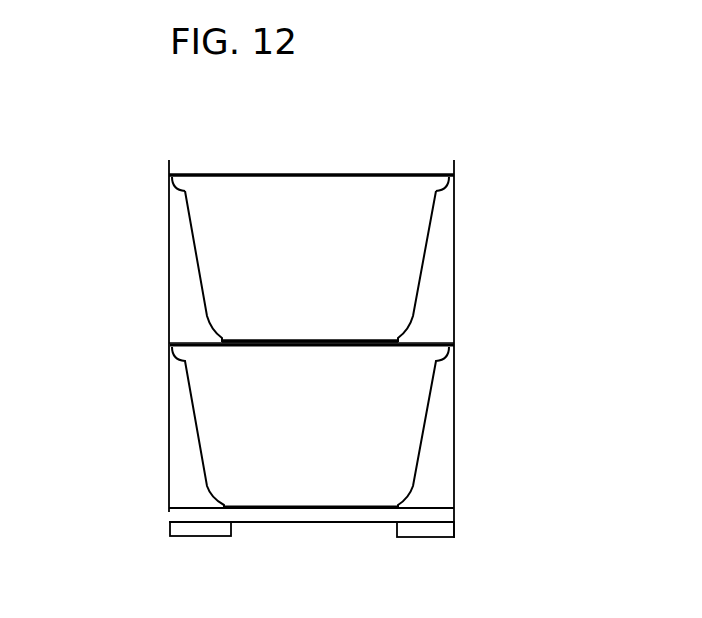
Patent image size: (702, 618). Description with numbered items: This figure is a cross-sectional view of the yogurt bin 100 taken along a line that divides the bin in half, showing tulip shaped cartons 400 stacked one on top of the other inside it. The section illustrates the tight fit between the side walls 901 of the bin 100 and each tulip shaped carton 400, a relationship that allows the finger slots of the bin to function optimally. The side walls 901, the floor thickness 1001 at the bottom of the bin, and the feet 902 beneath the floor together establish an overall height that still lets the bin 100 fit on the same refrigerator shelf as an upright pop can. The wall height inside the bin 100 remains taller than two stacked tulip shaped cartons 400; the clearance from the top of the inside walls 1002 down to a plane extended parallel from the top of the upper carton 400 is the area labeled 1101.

The bin 100 is at (173, 131).
The tulip shaped carton 400 is at (308, 190).
The side walls 901 is at (149, 340).
The feet 902 is at (201, 536).
The floor thickness 1001 is at (162, 511).
The top of the inside walls 1002 is at (176, 161).
The area above carton top 1101 is at (166, 164).